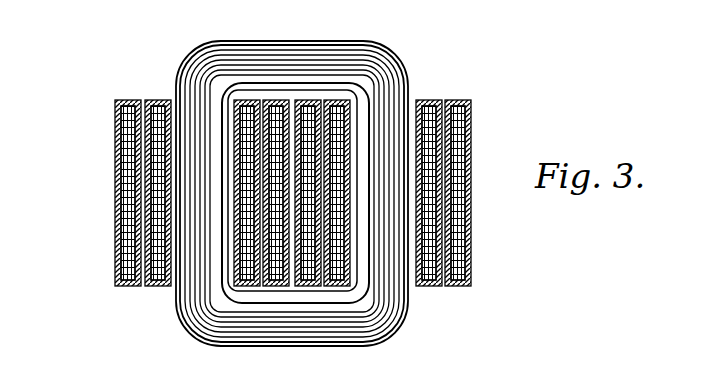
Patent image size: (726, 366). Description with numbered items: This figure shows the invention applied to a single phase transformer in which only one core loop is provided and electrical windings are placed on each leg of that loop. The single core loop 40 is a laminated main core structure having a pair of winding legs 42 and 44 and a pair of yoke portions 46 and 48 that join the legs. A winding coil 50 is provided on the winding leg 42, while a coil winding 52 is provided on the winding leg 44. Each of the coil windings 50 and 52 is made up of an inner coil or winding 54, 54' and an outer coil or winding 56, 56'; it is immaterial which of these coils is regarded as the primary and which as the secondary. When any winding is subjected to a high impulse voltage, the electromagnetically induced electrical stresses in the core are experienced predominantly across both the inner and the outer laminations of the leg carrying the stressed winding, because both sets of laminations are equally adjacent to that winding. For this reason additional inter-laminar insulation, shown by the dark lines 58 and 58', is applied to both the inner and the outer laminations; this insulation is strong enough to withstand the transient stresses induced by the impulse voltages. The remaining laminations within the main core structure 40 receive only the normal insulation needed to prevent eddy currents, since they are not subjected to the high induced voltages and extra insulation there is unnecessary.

The single core loop 40 is at (370, 67).
The winding leg 42 is at (383, 112).
The winding leg 44 is at (187, 110).
The yoke portion 46 is at (350, 33).
The yoke portion 48 is at (272, 317).
The winding coil 50 is at (464, 233).
The coil winding 52 is at (115, 233).
The inner coil 54 is at (424, 220).
The inner coil 54' is at (138, 218).
The outer coil 56 is at (486, 207).
The outer coil 56' is at (96, 207).
The inter-laminar insulation 58 is at (292, 47).
The inter-laminar insulation 58' is at (292, 177).